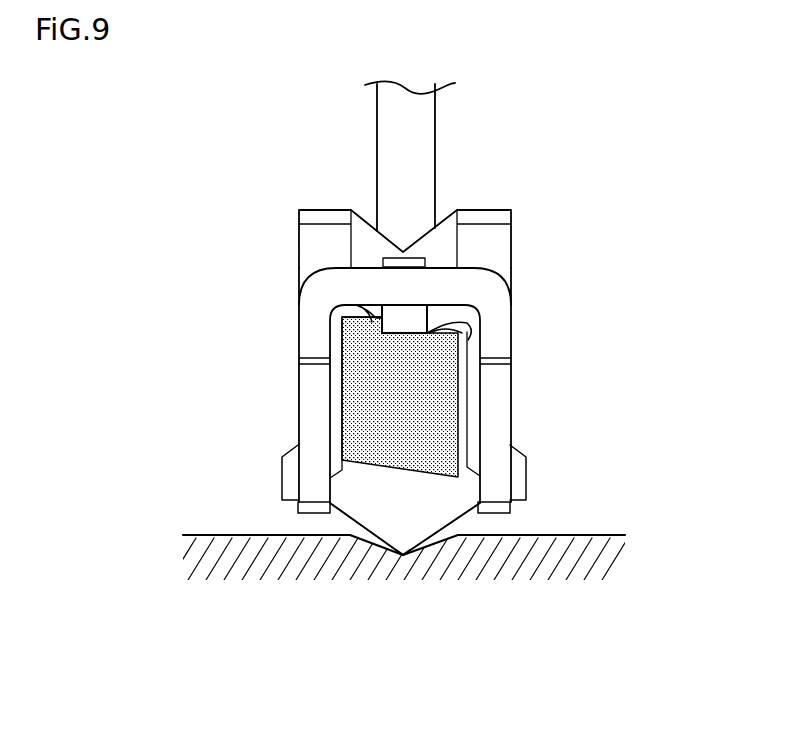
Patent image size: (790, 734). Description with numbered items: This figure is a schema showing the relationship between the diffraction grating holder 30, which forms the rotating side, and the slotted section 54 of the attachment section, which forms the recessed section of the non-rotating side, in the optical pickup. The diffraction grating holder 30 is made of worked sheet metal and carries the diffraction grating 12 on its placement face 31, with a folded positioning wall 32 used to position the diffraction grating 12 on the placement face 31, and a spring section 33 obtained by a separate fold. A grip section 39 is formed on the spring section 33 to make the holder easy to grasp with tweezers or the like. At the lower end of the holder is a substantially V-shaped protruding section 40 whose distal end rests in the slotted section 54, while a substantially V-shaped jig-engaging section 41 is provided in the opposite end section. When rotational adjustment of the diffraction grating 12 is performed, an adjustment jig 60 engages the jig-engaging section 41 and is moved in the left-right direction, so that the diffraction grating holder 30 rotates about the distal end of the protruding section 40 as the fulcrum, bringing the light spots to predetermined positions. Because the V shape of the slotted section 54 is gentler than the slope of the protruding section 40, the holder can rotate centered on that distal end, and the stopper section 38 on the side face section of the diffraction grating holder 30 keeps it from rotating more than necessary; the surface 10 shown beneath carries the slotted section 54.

The adjustment jig 60 is at (425, 127).
The jig-engaging section 41 is at (445, 208).
The diffraction grating holder 30 is at (417, 347).
The spring section 33 is at (502, 318).
The stopper section 38 is at (288, 463).
The placement face 31 is at (425, 492).
The grip section 39 is at (405, 323).
The positioning wall 32 is at (345, 370).
The diffraction grating 12 is at (362, 405).
The substrate surface 10 is at (613, 535).
The slotted section 54 is at (433, 540).
The protruding section 40 is at (398, 553).